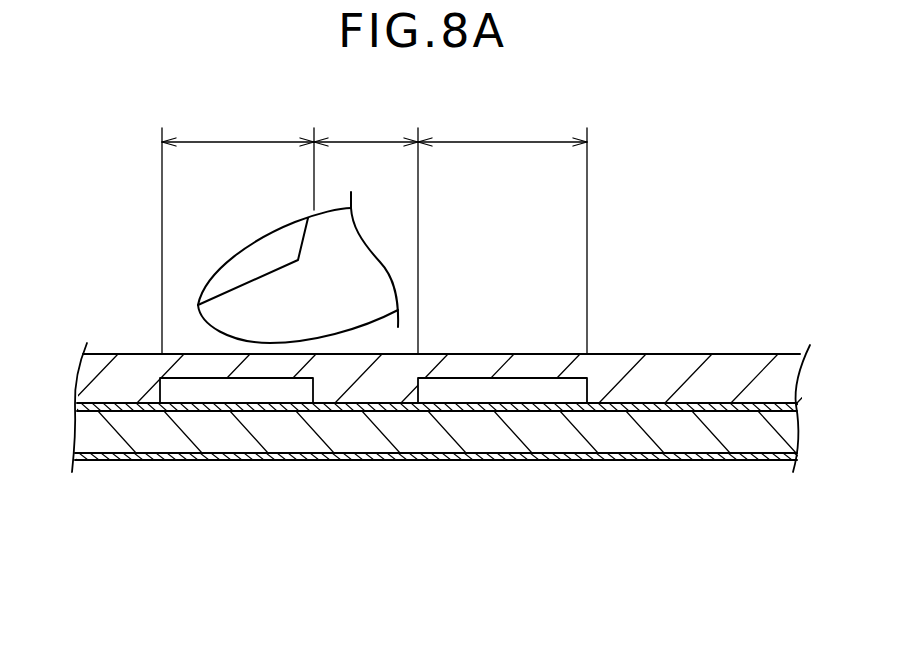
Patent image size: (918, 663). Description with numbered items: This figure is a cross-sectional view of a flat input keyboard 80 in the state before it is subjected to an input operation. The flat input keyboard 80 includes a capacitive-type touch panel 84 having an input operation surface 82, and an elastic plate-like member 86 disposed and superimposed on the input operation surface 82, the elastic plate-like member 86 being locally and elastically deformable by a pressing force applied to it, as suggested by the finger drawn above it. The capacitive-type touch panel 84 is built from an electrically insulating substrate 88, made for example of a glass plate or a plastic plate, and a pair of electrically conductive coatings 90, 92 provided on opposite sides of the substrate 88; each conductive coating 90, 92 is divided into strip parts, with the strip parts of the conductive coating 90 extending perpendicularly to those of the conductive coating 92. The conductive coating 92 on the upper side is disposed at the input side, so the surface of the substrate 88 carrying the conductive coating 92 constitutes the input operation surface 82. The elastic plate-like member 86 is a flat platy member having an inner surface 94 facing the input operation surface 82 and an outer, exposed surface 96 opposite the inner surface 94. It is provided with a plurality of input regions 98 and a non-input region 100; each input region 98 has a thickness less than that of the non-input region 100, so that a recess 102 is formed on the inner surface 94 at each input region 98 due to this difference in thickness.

The flat input keyboard 80 is at (685, 257).
The input operation surface 82 is at (707, 403).
The capacitive-type touch panel 84 is at (664, 463).
The elastic plate-like member 86 is at (693, 353).
The electrically insulating substrate 88 is at (359, 446).
The electrically conductive coating 90 is at (403, 460).
The electrically conductive coating 92 is at (303, 413).
The inner surface 94 is at (92, 411).
The outer surface 96 is at (103, 353).
The input region 98 is at (374, 230).
The non-input region 100 is at (366, 158).
The recess 102 is at (160, 380).